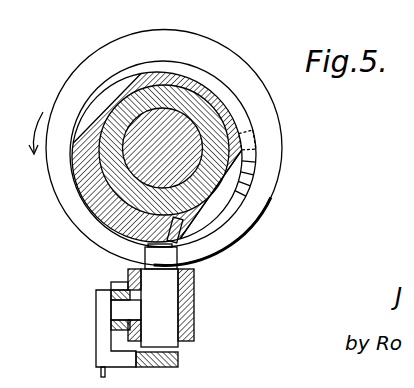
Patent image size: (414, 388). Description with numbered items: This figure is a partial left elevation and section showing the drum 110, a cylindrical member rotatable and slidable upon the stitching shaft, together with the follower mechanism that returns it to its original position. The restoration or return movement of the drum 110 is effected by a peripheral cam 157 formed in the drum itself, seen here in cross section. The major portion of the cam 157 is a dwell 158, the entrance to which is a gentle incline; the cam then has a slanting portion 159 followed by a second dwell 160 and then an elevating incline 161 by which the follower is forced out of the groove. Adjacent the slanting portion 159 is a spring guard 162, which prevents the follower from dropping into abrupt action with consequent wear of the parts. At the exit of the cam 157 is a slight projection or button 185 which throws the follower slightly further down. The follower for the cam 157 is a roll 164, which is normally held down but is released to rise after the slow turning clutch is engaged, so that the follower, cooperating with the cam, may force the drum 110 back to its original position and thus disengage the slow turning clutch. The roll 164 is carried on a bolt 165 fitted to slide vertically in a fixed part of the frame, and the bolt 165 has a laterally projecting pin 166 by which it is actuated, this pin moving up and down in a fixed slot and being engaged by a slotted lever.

The drum 110 is at (46, 117).
The peripheral cam 157 is at (221, 86).
The dwell 158 is at (128, 70).
The slanting portion 159 is at (254, 182).
The second dwell 160 is at (220, 210).
The elevating incline 161 is at (200, 241).
The spring guard 162 is at (245, 161).
The roll 164 is at (161, 256).
The bolt 165 is at (145, 323).
The laterally projecting pin 166 is at (114, 310).
The projection or button 185 is at (205, 262).